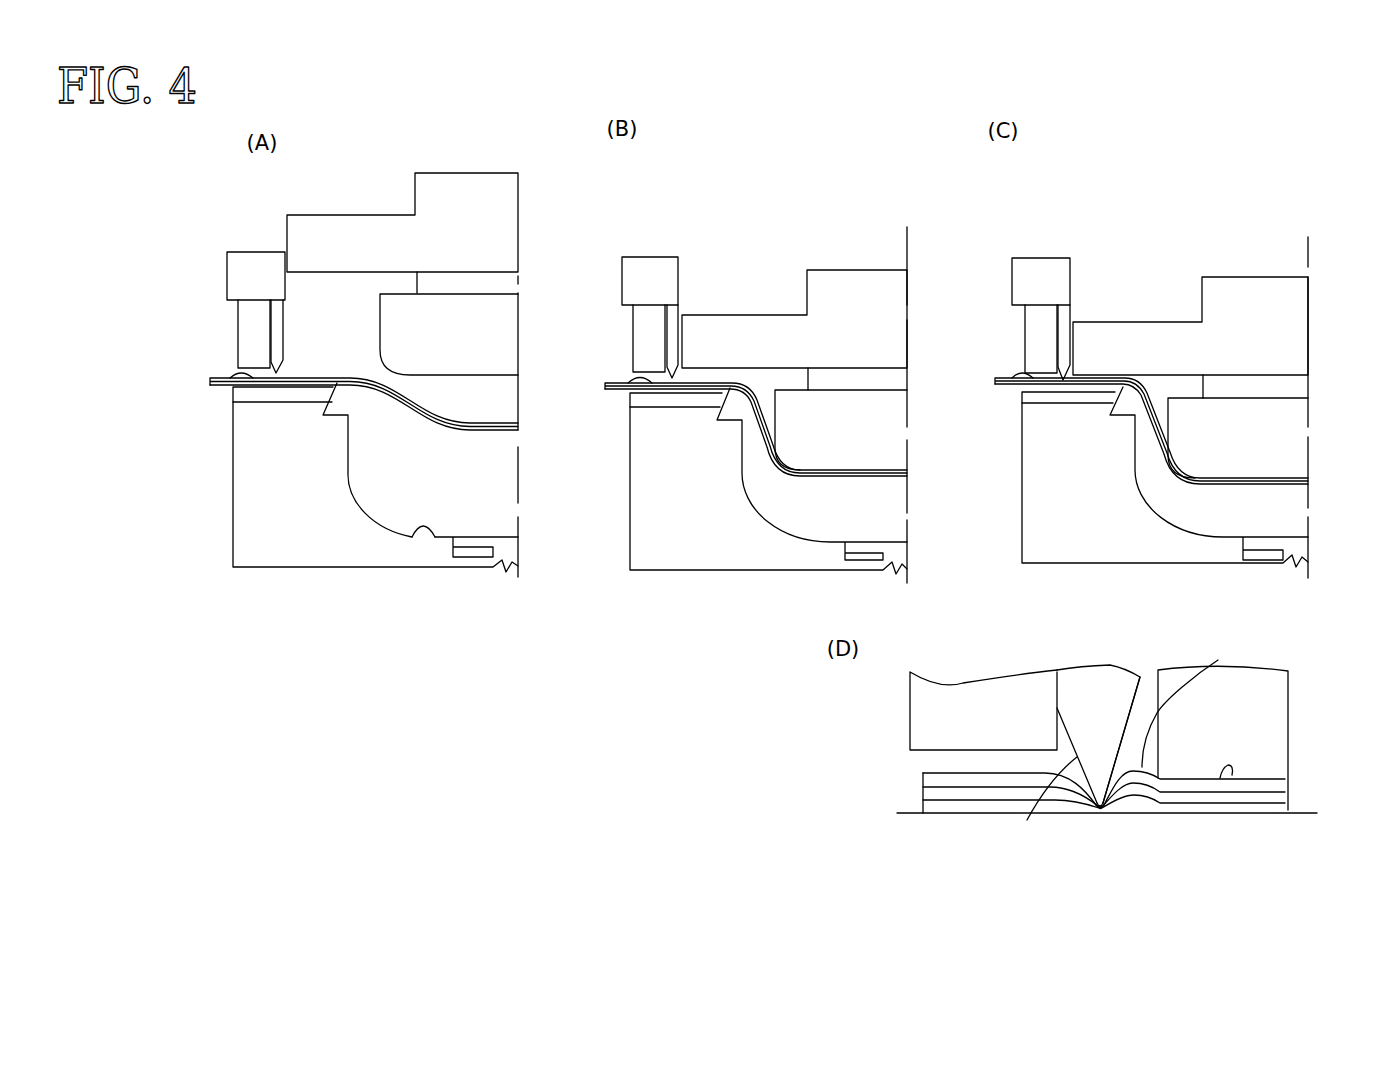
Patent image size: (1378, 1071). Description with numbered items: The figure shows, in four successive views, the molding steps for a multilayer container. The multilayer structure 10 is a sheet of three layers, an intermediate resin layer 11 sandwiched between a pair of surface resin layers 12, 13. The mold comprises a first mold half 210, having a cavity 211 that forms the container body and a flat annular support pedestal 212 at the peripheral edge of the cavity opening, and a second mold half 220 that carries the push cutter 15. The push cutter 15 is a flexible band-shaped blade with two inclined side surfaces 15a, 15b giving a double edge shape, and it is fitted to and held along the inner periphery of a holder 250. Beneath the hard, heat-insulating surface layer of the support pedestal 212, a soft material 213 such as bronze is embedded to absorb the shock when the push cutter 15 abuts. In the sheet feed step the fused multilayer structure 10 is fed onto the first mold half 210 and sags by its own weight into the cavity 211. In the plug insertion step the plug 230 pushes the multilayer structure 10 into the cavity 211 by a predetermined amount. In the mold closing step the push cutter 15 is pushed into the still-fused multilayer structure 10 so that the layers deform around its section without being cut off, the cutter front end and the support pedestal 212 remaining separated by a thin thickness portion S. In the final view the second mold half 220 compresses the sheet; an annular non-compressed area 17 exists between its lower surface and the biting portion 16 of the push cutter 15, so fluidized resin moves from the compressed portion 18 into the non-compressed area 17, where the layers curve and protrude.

The multilayer structure 10 is at (208, 378).
The intermediate resin layer 11 is at (1277, 793).
The surface resin layer 12 is at (1267, 777).
The surface resin layer 13 is at (1272, 805).
The push cutter 15 is at (278, 323).
The inclined side surface 15a is at (1122, 753).
The inclined side surface 15b is at (1034, 802).
The biting portion 16 is at (1102, 807).
The non-compressed area 17 is at (1195, 699).
The compressed portion 18 is at (1232, 775).
The first mold half 210 is at (310, 540).
The cavity 211 is at (408, 539).
The support pedestal 212 is at (222, 384).
The soft material 213 is at (297, 402).
The second mold half 220 is at (361, 233).
The plug 230 is at (505, 350).
The holder 250 is at (243, 318).
The thin thickness portion S is at (1090, 810).